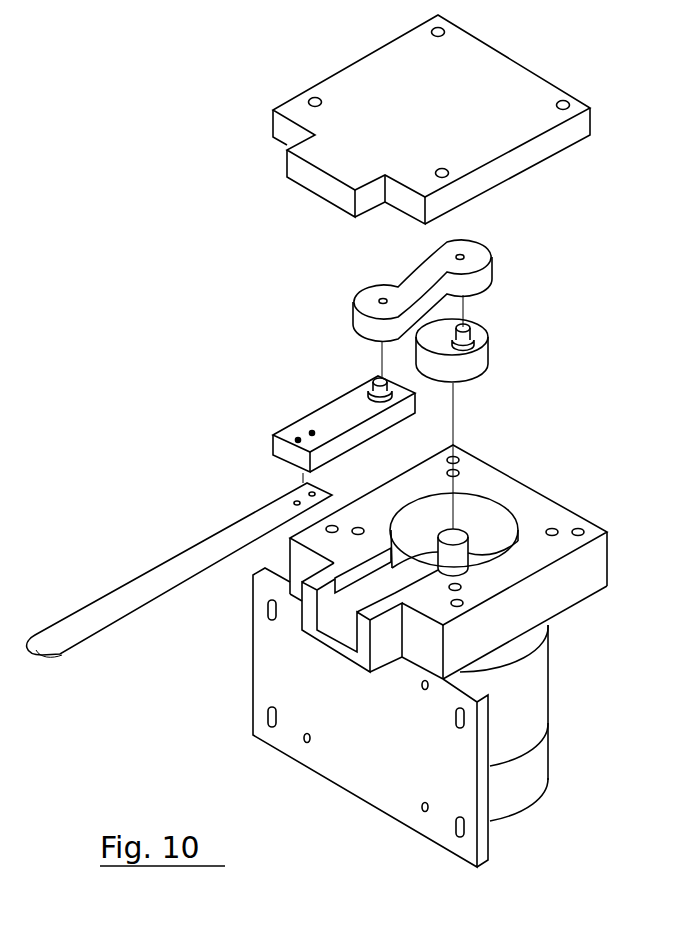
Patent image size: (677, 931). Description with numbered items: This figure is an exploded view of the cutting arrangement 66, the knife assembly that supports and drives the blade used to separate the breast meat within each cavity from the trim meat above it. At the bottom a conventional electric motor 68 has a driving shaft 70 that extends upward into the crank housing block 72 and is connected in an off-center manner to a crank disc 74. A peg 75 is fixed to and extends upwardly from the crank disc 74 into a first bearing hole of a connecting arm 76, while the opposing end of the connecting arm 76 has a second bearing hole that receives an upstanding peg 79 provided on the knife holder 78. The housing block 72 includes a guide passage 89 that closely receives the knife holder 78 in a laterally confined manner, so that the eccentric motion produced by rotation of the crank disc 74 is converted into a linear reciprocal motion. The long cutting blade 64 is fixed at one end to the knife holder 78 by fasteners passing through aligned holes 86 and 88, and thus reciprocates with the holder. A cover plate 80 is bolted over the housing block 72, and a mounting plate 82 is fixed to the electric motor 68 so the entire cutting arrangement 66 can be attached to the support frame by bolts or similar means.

The cutting blade 64 is at (179, 559).
The cutting arrangement 66 is at (162, 292).
The electric motor 68 is at (548, 786).
The driving shaft 70 is at (460, 530).
The crank housing block 72 is at (435, 615).
The crank disc 74 is at (487, 350).
The peg 75 is at (470, 328).
The connecting arm 76 is at (353, 312).
The knife holder 78 is at (322, 403).
The upstanding peg 79 is at (375, 382).
The cover plate 80 is at (300, 188).
The mounting plate 82 is at (253, 683).
The aligned holes 86 is at (310, 432).
The aligned holes 88 is at (308, 494).
The guide passage 89 is at (337, 628).